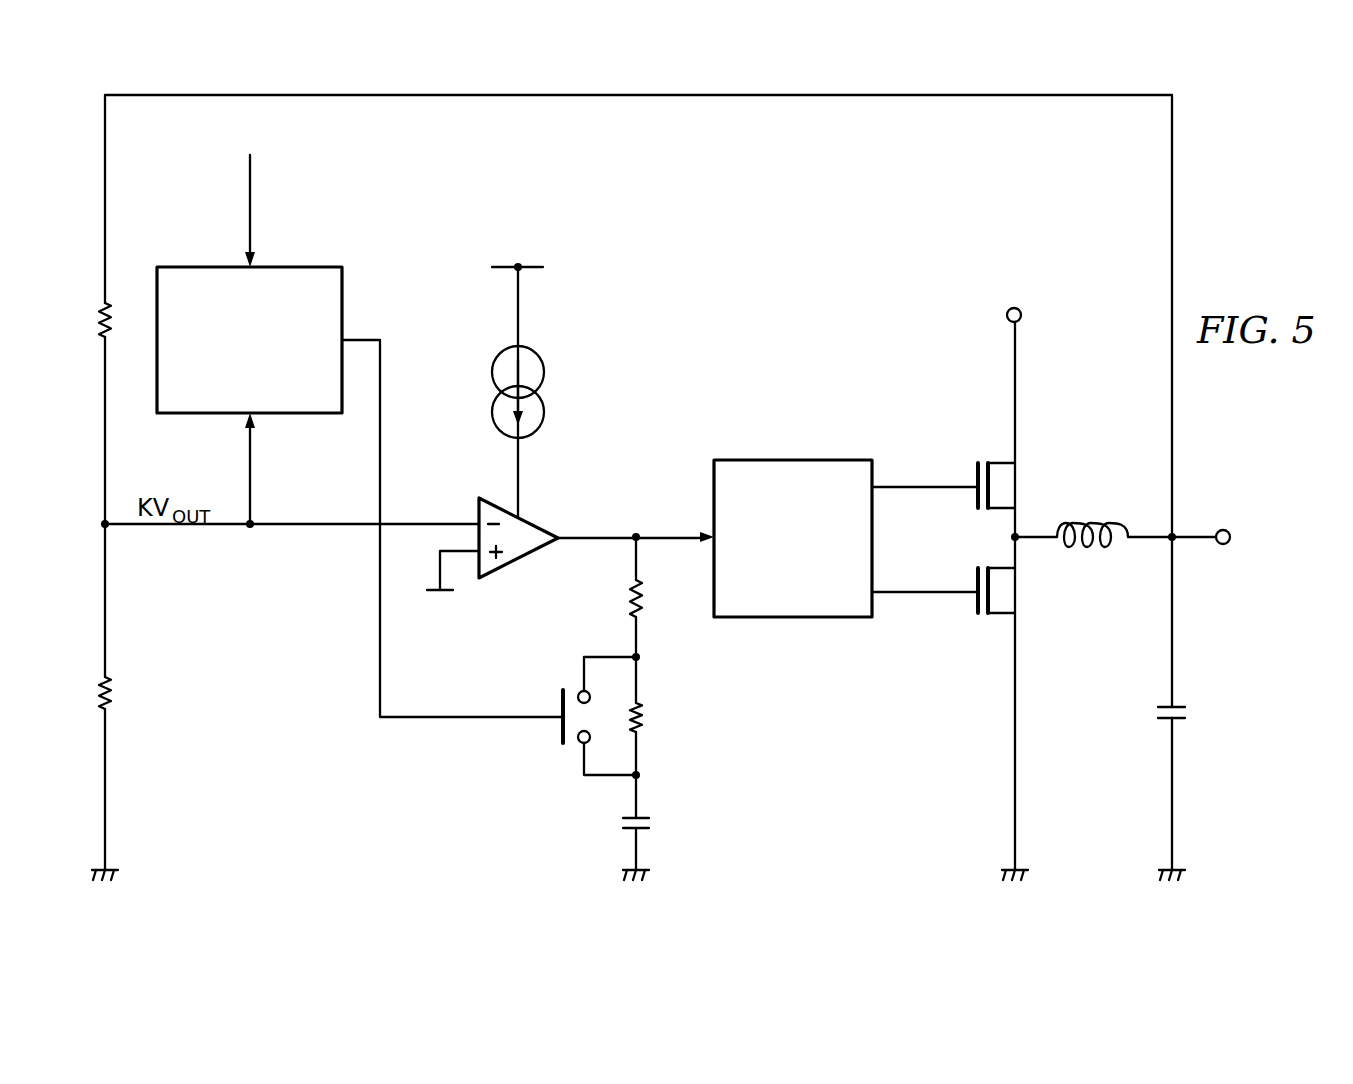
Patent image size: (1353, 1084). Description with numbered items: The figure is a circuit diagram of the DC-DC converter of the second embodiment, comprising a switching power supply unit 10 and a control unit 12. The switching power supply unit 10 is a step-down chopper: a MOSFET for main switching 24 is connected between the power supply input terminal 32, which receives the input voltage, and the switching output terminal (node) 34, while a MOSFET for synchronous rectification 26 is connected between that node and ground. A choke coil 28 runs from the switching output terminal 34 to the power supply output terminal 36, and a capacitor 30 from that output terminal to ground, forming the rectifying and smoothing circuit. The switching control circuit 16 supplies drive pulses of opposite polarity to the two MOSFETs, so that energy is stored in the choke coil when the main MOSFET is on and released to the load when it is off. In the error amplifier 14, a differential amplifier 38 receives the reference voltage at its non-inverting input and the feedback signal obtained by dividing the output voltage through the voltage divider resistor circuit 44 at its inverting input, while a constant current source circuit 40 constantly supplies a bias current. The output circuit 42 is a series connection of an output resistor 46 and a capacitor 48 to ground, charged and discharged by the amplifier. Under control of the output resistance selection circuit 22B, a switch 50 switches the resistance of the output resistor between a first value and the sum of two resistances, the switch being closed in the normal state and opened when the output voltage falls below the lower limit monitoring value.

The switching power supply unit 10 is at (1100, 594).
The control unit 12 is at (647, 701).
The error amplifier 14 is at (563, 445).
The switching control circuit 16 is at (793, 459).
The output resistance selection circuit 22B is at (205, 266).
The MOSFET for main switching 24 is at (975, 500).
The MOSFET for synchronous rectification 26 is at (975, 605).
The choke coil 28 is at (1092, 527).
The capacitor 30 is at (1187, 712).
The power supply input terminal 32 is at (1022, 318).
The switching output terminal (node) 34 is at (1020, 545).
The power supply output terminal 36 is at (1222, 527).
The differential amplifier 38 is at (538, 524).
The constant current source circuit 40 is at (492, 365).
The output circuit 42 is at (609, 656).
The voltage divider resistor circuit 44 is at (113, 535).
The output resistor 46 is at (645, 660).
The capacitor 48 is at (617, 826).
The switch for switching output resistance 50 is at (558, 735).